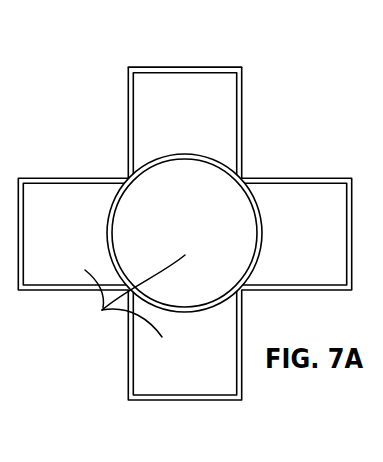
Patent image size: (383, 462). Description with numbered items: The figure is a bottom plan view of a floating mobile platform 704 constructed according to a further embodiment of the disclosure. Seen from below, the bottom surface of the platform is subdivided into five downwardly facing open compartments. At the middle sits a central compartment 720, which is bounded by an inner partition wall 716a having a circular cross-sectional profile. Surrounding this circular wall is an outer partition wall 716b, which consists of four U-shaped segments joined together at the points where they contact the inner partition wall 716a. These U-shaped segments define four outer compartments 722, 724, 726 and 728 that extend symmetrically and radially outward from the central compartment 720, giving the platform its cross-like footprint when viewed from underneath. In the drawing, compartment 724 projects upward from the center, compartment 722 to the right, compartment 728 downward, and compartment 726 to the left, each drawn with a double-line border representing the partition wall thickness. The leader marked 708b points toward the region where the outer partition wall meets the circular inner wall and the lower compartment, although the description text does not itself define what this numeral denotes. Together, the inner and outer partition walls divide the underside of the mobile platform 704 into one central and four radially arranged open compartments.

The floating mobile platform 704 is at (275, 121).
The inner partition wall 716a is at (214, 66).
The outer partition wall 716b is at (254, 200).
The central compartment 720 is at (163, 234).
The outer compartment 722 is at (285, 234).
The outer compartment 724 is at (167, 120).
The outer compartment 726 is at (47, 234).
The outer compartment 728 is at (163, 366).
The connection lines 708b is at (123, 296).